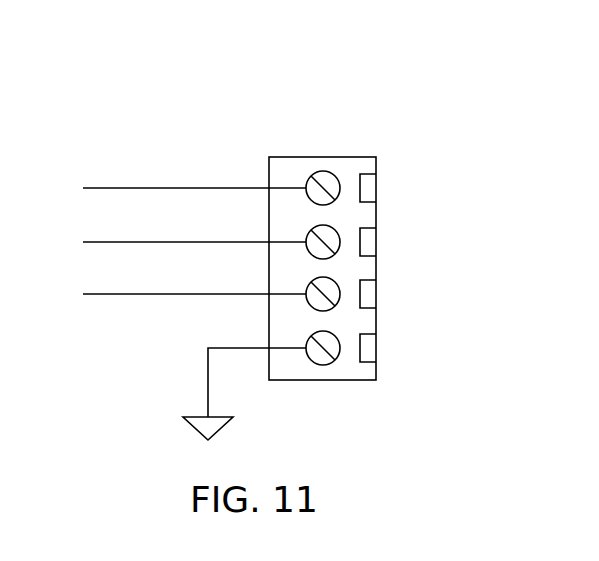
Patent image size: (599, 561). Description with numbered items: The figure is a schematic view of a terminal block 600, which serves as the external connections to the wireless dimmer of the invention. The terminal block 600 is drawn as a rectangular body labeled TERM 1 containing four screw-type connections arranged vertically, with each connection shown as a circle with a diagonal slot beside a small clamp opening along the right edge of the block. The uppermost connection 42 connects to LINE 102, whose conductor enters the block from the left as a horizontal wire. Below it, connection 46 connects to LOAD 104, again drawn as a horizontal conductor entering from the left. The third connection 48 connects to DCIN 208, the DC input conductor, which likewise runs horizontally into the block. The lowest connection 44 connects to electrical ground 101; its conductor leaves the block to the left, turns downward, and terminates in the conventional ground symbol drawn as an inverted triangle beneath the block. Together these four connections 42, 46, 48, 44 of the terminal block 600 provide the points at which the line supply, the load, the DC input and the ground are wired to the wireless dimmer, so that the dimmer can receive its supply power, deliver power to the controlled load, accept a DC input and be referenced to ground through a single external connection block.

The terminal block 600 is at (149, 120).
The LINE 102 is at (66, 168).
The LOAD 104 is at (162, 226).
The DCIN 208 is at (162, 281).
The connection 42 is at (334, 178).
The connection 46 is at (334, 232).
The connection 48 is at (334, 284).
The connection 44 is at (334, 338).
The electrical ground 101 is at (198, 415).